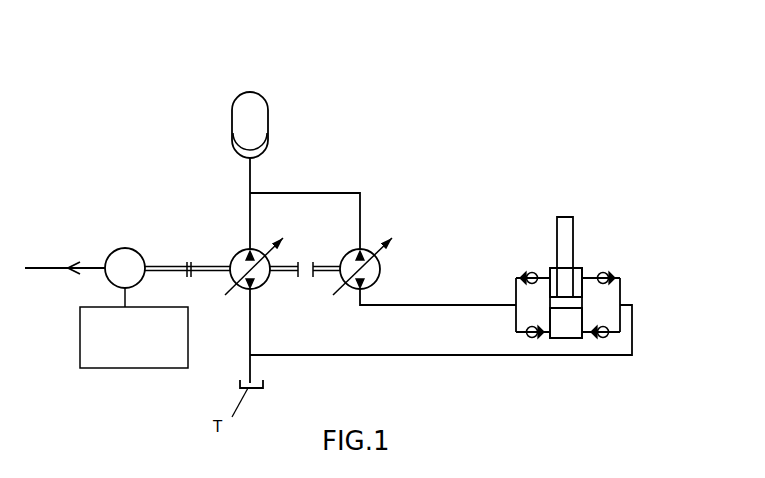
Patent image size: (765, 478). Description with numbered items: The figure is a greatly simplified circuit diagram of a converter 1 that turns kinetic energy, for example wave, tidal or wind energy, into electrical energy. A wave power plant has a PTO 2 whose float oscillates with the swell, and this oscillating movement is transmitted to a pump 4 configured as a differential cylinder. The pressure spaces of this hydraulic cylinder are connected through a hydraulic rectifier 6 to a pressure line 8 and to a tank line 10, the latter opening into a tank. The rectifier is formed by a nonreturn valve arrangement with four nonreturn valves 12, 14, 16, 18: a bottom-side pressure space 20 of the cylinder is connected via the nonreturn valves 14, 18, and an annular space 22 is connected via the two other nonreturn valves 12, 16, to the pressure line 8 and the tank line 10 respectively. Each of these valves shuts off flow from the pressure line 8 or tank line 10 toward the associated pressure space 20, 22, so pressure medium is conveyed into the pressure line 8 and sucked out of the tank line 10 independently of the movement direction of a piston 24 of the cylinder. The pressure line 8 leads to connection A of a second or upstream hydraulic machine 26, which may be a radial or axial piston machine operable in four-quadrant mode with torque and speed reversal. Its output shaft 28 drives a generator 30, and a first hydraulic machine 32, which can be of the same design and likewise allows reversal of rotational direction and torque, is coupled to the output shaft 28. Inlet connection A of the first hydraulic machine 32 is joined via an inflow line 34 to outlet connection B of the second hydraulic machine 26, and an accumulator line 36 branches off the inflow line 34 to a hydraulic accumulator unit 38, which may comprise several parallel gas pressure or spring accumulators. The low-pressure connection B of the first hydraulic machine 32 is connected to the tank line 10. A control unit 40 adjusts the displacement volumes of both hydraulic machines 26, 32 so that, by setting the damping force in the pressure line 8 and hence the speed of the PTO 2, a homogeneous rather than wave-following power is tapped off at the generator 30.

The converter 1 is at (362, 138).
The PTO 2 is at (608, 225).
The pump 4 is at (550, 220).
The hydraulic rectifier 6 is at (535, 257).
The pressure line 8 is at (475, 303).
The tank line 10 is at (533, 357).
The nonreturn valve 12 is at (527, 273).
The nonreturn valve 14 is at (527, 340).
The nonreturn valve 16 is at (599, 272).
The nonreturn valve 18 is at (602, 340).
The bottom-side pressure space 20 is at (566, 323).
The annular space 22 is at (580, 263).
The piston 24 is at (573, 263).
The second hydraulic machine 26 is at (375, 272).
The output shaft 28 is at (327, 263).
The generator 30 is at (125, 247).
The first hydraulic machine 32 is at (262, 273).
The inflow line 34 is at (362, 203).
The accumulator line 36 is at (255, 175).
The hydraulic accumulator unit 38 is at (242, 118).
The control unit 40 is at (100, 370).